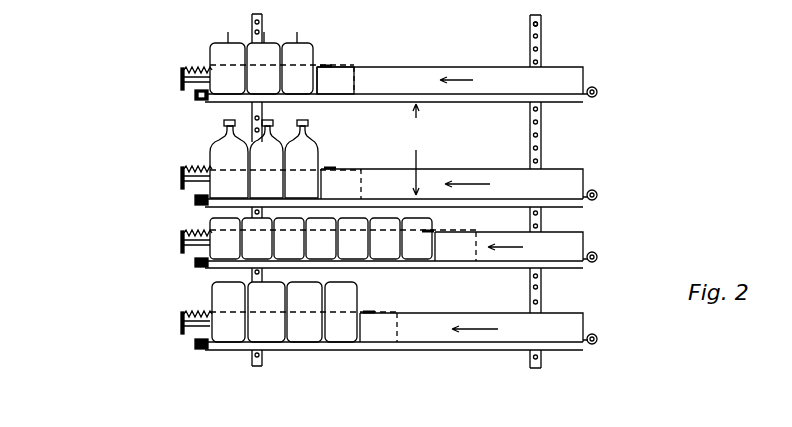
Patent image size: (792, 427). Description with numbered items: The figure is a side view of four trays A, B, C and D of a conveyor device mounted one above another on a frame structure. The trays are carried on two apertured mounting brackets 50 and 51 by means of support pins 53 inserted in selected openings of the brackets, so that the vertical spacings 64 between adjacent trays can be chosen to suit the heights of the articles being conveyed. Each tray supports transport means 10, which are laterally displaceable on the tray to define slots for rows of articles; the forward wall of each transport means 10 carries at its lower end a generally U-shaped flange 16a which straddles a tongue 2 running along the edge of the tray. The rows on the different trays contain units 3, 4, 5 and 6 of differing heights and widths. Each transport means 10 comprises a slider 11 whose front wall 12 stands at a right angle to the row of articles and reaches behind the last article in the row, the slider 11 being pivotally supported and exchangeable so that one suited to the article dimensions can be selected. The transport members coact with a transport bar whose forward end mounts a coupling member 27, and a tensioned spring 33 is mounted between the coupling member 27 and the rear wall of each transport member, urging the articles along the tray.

The tongue 2 is at (206, 100).
The units of articles 3 is at (216, 48).
The units of articles 4 is at (217, 142).
The units of articles 5 is at (218, 222).
The units of articles 6 is at (220, 283).
The transport means 10 is at (623, 316).
The slider 11 is at (330, 63).
The front wall 12 is at (318, 80).
The U-shaped flange 16a is at (196, 94).
The coupling member 27 is at (181, 75).
The tensioned spring 33 is at (193, 68).
The mounting bracket 50 is at (260, 365).
The mounting bracket 51 is at (530, 367).
The support pins 53 is at (538, 24).
The vertical spacing 64 is at (418, 149).
The tray A is at (565, 100).
The tray B is at (568, 205).
The tray C is at (570, 268).
The tray D is at (570, 350).